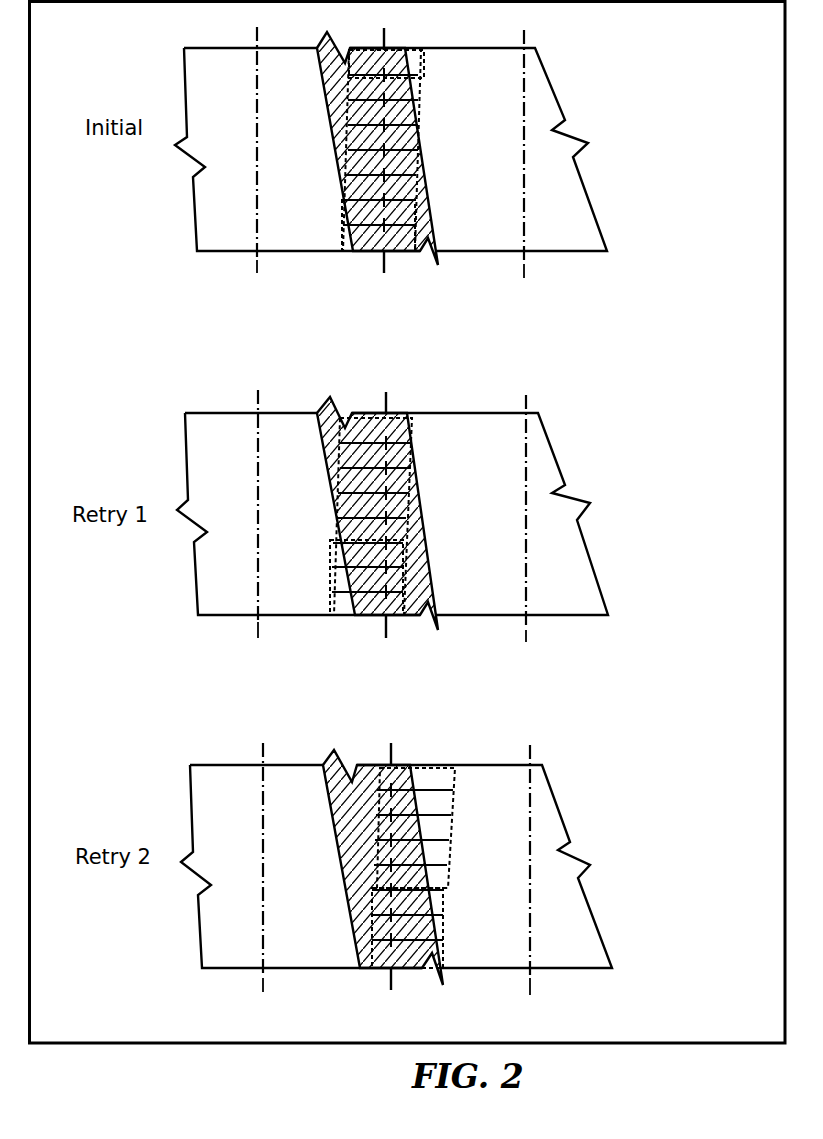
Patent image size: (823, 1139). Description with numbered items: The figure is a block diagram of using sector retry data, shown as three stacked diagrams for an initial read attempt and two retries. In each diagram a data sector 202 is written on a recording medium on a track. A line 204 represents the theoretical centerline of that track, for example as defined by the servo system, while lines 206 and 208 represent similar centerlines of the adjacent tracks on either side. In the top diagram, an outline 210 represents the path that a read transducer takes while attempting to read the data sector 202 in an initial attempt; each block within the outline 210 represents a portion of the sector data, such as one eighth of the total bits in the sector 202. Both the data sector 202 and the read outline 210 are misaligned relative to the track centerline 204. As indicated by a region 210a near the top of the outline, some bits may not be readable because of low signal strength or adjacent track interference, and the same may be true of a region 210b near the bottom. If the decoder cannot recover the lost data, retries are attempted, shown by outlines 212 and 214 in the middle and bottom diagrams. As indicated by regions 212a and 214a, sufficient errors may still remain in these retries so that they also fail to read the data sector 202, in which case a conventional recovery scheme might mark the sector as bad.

The data sector 202 is at (333, 152).
The theoretical centerline of the track 204 is at (384, 268).
The centerline of adjacent track 206 is at (257, 268).
The centerline of adjacent track 208 is at (524, 274).
The outline of initial read path 210 is at (424, 162).
The region of unreadable bits 210a is at (441, 52).
The region of unreadable bits 210b is at (336, 203).
The outline of first retry read path 212 is at (413, 424).
The region of errors in first retry 212a is at (322, 537).
The outline of second retry read path 214 is at (444, 913).
The region of errors in second retry 214a is at (465, 768).